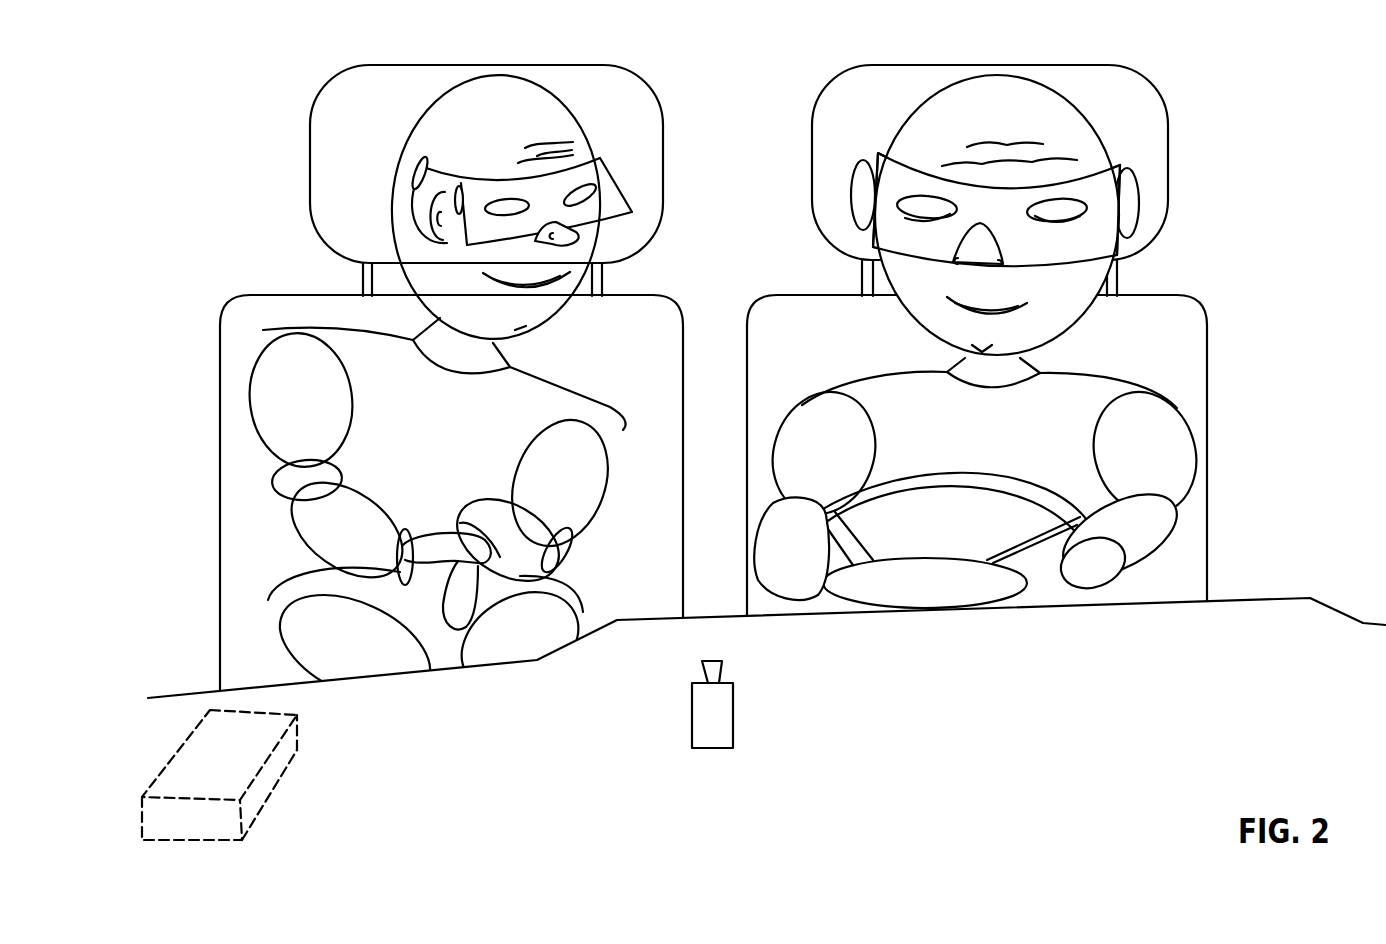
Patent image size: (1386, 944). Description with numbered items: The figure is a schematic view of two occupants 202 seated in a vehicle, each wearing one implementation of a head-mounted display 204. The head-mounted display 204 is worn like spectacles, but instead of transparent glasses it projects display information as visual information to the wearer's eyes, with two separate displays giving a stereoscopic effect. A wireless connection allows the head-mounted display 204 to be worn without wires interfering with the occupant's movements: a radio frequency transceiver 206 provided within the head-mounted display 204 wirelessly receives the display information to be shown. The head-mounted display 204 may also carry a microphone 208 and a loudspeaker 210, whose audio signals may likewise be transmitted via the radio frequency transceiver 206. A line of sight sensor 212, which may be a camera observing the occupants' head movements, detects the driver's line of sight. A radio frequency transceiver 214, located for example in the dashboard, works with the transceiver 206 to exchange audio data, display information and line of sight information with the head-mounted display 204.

The occupants 202 is at (250, 404).
The head-mounted display 204 is at (632, 203).
The radio frequency transceiver 206 is at (415, 167).
The microphone 208 is at (537, 245).
The loudspeaker 210 is at (459, 186).
The line of sight sensor 212 is at (733, 719).
The radio frequency transceiver 214 is at (297, 748).